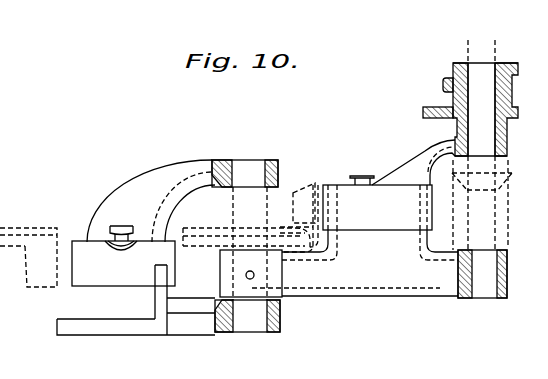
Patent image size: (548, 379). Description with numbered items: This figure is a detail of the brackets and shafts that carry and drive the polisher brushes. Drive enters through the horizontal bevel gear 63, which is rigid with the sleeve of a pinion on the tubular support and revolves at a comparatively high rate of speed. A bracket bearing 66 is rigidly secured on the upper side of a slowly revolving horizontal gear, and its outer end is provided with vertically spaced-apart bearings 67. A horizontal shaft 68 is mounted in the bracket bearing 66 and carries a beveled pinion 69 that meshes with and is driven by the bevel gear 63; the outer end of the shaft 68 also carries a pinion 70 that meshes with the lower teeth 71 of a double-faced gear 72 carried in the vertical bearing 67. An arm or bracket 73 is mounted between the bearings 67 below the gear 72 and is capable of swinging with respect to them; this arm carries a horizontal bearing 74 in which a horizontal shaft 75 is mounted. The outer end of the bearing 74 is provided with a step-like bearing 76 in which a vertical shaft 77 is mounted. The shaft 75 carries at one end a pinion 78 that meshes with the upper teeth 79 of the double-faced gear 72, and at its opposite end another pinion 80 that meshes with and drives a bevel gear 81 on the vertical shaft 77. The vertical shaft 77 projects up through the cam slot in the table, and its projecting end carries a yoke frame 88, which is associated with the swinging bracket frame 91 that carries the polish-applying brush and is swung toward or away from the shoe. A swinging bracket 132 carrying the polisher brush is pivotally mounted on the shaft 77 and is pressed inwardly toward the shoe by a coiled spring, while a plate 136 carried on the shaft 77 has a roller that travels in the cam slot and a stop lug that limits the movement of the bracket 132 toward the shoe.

The horizontal bevel gear 63 is at (34, 228).
The bracket bearing 66 is at (123, 256).
The bearings 67 is at (214, 160).
The horizontal shaft 68 is at (175, 261).
The beveled pinion 69 is at (52, 286).
The pinion 70 is at (190, 300).
The lower teeth 71 is at (305, 261).
The double-faced gear 72 is at (165, 228).
The arm or bracket 73 is at (390, 296).
The horizontal bearing 74 is at (357, 218).
The horizontal shaft 75 is at (318, 200).
The step-like bearing 76 is at (464, 299).
The vertical shaft 77 is at (488, 35).
The pinion 78 is at (297, 184).
The upper teeth 79 is at (205, 228).
The pinion 80 is at (432, 234).
The bevel gear 81 is at (500, 191).
The yoke frame 88 is at (452, 98).
The swinging bracket frame 91 is at (443, 80).
The swinging bracket 132 is at (452, 64).
The plate 136 is at (423, 112).